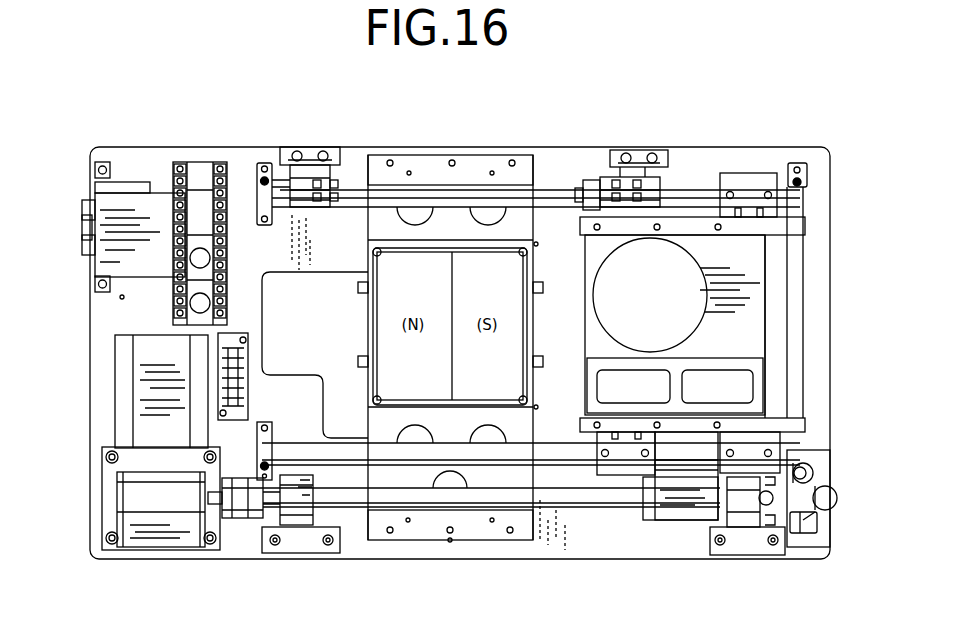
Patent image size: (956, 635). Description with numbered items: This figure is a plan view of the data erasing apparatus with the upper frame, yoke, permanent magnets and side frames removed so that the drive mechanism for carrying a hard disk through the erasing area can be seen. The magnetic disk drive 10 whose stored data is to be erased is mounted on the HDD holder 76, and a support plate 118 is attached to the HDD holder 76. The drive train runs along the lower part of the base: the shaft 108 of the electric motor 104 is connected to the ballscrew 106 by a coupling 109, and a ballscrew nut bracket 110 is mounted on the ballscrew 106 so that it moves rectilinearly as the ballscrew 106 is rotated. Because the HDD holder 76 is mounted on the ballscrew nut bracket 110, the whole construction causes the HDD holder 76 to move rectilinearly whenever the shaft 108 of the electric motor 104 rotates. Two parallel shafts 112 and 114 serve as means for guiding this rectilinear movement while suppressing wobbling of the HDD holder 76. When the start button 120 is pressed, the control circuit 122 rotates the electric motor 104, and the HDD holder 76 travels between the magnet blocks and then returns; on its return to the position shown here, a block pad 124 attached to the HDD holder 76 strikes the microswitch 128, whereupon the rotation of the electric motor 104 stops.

The magnetic disk drive 10 is at (743, 260).
The HDD holder 76 is at (692, 215).
The electric motor 104 is at (150, 383).
The ballscrew 106 is at (623, 462).
The shaft 108 is at (215, 500).
The coupling 109 is at (240, 500).
The ballscrew nut bracket 110 is at (600, 492).
The shaft 112 is at (553, 190).
The shaft 114 is at (548, 450).
The support plate 118 is at (780, 302).
The start button 120 is at (810, 472).
The control circuit 122 is at (118, 262).
The block pad 124 is at (590, 195).
The microswitch 128 is at (635, 200).